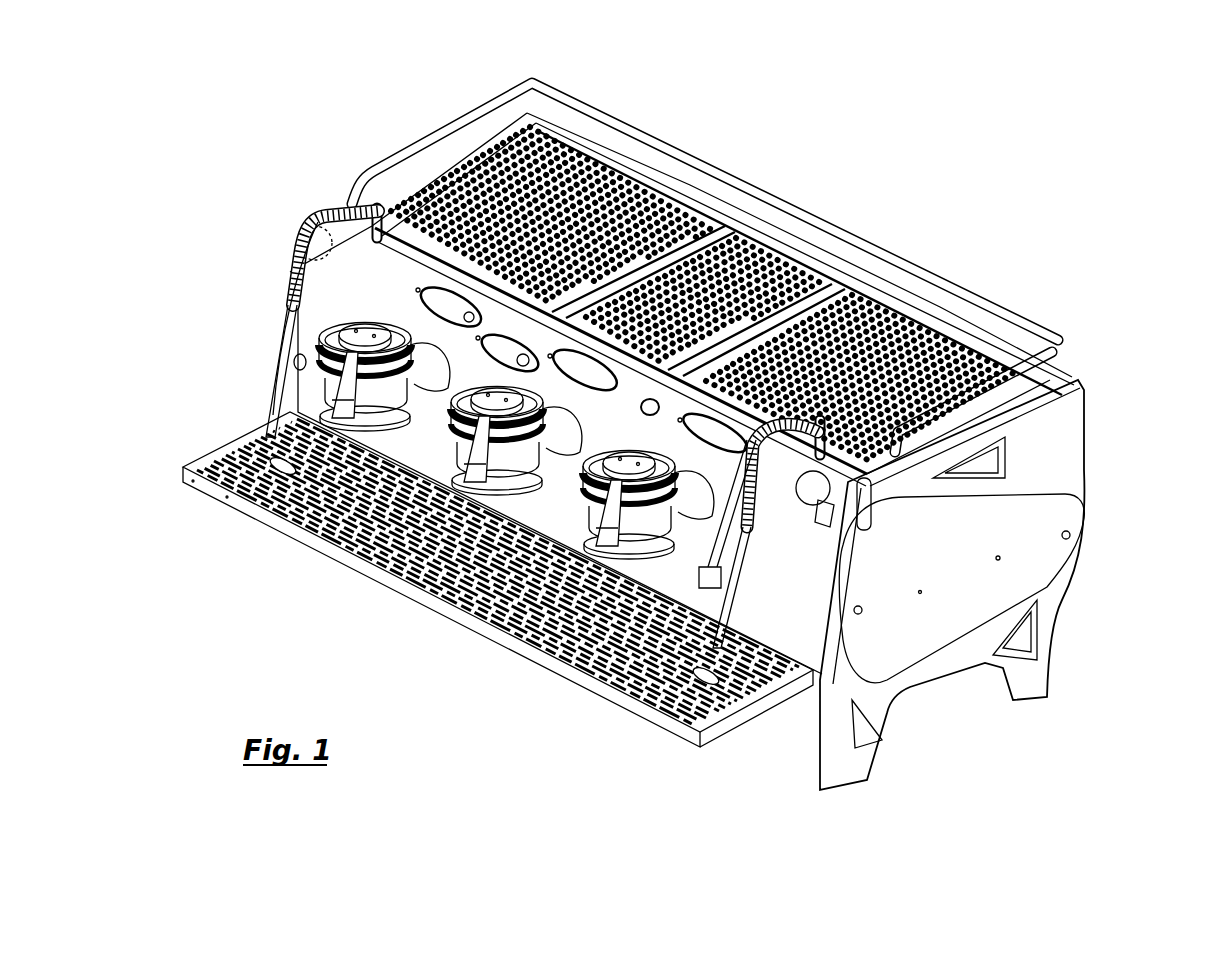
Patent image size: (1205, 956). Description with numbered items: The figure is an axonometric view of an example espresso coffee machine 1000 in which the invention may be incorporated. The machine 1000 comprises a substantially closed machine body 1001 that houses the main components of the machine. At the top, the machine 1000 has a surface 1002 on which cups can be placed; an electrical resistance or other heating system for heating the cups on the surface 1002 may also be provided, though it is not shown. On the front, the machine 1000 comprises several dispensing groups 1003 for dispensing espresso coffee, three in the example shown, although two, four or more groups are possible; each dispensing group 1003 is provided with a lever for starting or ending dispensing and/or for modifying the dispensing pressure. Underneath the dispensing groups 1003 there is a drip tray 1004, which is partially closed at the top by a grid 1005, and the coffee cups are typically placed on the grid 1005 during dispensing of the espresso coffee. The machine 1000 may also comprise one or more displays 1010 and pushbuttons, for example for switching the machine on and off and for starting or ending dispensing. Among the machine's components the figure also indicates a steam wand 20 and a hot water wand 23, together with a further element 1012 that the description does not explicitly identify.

The espresso coffee machine 1000 is at (880, 147).
The machine body 1001 is at (1037, 476).
The surface 1002 is at (435, 183).
The dispensing group 1003 is at (320, 320).
The drip tray 1004 is at (228, 497).
The grid 1005 is at (227, 450).
The display 1010 is at (303, 263).
The front panel 1012 is at (478, 484).
The steam wand 20 is at (700, 597).
The hot water wand 23 is at (590, 618).